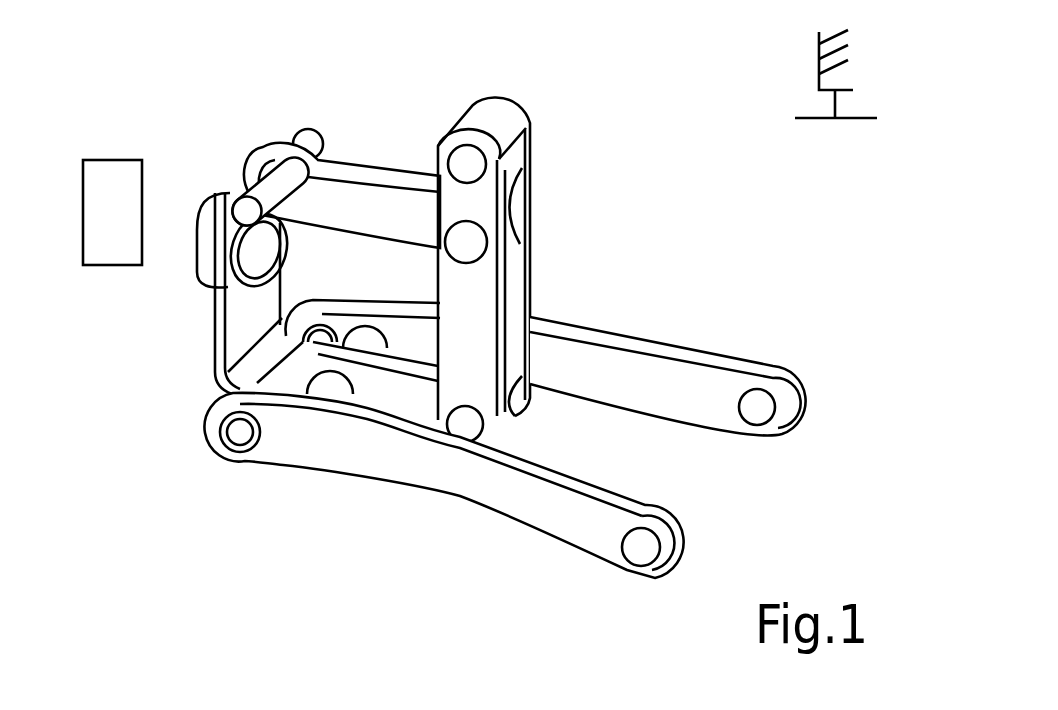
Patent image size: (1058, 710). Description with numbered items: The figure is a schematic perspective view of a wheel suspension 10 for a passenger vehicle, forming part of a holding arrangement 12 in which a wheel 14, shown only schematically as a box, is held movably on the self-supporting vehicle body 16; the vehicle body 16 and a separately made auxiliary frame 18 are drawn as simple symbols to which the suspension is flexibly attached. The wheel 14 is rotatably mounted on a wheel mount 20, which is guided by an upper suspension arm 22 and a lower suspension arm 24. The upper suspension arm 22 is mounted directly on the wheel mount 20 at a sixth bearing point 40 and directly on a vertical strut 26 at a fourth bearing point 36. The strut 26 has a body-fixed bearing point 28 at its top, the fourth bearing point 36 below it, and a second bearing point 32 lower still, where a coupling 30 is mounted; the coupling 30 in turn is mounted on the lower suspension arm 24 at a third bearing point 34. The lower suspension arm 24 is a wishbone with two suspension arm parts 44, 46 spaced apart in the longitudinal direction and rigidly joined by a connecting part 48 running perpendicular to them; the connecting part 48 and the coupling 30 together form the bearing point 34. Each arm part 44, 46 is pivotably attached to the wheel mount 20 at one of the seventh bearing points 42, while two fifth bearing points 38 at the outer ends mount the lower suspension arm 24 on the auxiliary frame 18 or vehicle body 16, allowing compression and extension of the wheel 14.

The wheel suspension 10 is at (510, 95).
The holding arrangement 12 is at (228, 144).
The wheel 14 is at (112, 265).
The vehicle body 16 is at (819, 65).
The auxiliary frame 18 is at (855, 120).
The wheel mount 20 is at (250, 323).
The upper suspension arm 22 is at (357, 205).
The lower suspension arm 24 is at (464, 478).
The strut 26 is at (537, 274).
The bearing point 28 is at (480, 163).
The coupling 30 is at (398, 398).
The second bearing point 32 is at (480, 430).
The third bearing point 34 is at (326, 386).
The fourth bearing point 36 is at (483, 237).
The fifth bearing points 38 is at (757, 412).
The sixth bearing point 40 is at (262, 147).
The seventh bearing points 42 is at (320, 318).
The suspension arm part 44 is at (520, 495).
The suspension arm part 46 is at (655, 345).
The connecting part 48 is at (361, 340).